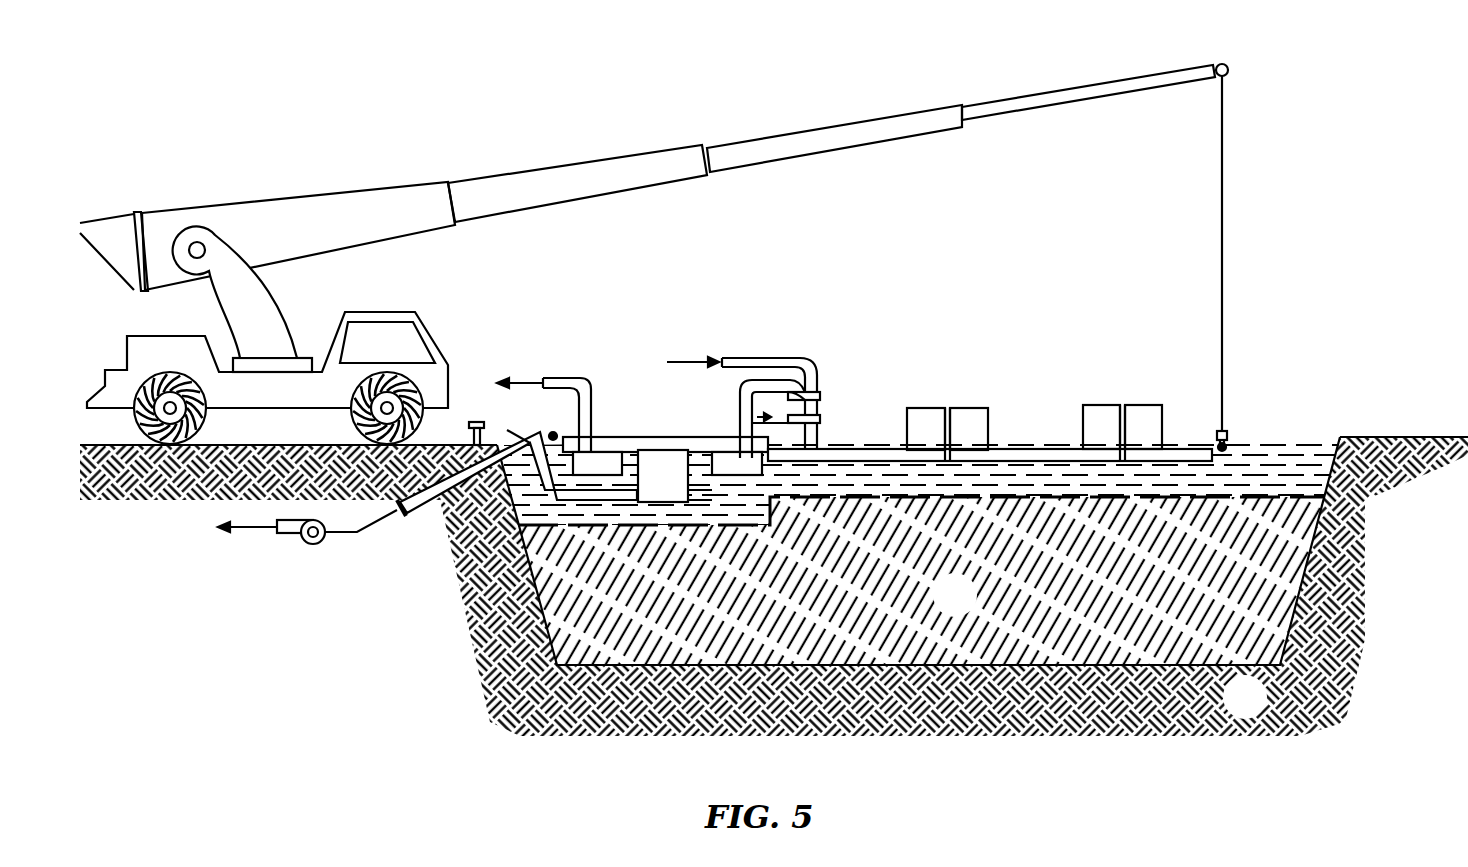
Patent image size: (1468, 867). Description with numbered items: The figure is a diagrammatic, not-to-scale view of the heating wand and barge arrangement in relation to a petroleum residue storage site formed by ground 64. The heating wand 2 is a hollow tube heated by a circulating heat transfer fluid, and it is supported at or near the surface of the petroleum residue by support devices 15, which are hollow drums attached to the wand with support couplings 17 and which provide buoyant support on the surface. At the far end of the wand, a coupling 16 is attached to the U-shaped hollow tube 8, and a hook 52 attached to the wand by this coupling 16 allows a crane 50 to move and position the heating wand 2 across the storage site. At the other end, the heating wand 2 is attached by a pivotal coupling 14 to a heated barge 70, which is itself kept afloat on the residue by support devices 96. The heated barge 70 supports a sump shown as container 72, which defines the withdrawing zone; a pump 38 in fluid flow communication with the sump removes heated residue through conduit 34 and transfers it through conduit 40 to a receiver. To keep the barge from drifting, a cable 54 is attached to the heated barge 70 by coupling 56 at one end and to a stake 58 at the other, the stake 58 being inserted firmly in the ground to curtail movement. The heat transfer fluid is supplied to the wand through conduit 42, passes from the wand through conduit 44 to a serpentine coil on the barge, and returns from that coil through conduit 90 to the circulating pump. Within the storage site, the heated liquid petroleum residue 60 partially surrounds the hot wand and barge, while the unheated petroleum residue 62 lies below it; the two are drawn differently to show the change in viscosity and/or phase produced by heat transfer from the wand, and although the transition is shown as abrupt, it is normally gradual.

The heating wand 2 is at (1057, 434).
The U-shaped hollow tube 8 is at (1216, 444).
The pivotal coupling 14 is at (816, 377).
The support devices 15 is at (985, 407).
The coupling 16 is at (1228, 455).
The support couplings 17 is at (945, 407).
The conduit 34 is at (410, 514).
The pump 38 is at (313, 545).
The conduit 40 is at (250, 530).
The conduit 42 is at (789, 356).
The conduit 44 is at (753, 356).
The crane 50 is at (300, 197).
The hook 52 is at (1228, 440).
The cable 54 is at (505, 433).
The coupling 56 is at (532, 433).
The stake 58 is at (473, 422).
The heated liquid petroleum residue 60 is at (918, 481).
The unheated petroleum residue 62 is at (921, 581).
The ground 64 is at (774, 586).
The heated barge 70 is at (640, 436).
The container 72 is at (685, 436).
The conduit 90 is at (592, 393).
The support devices 96 is at (608, 437).